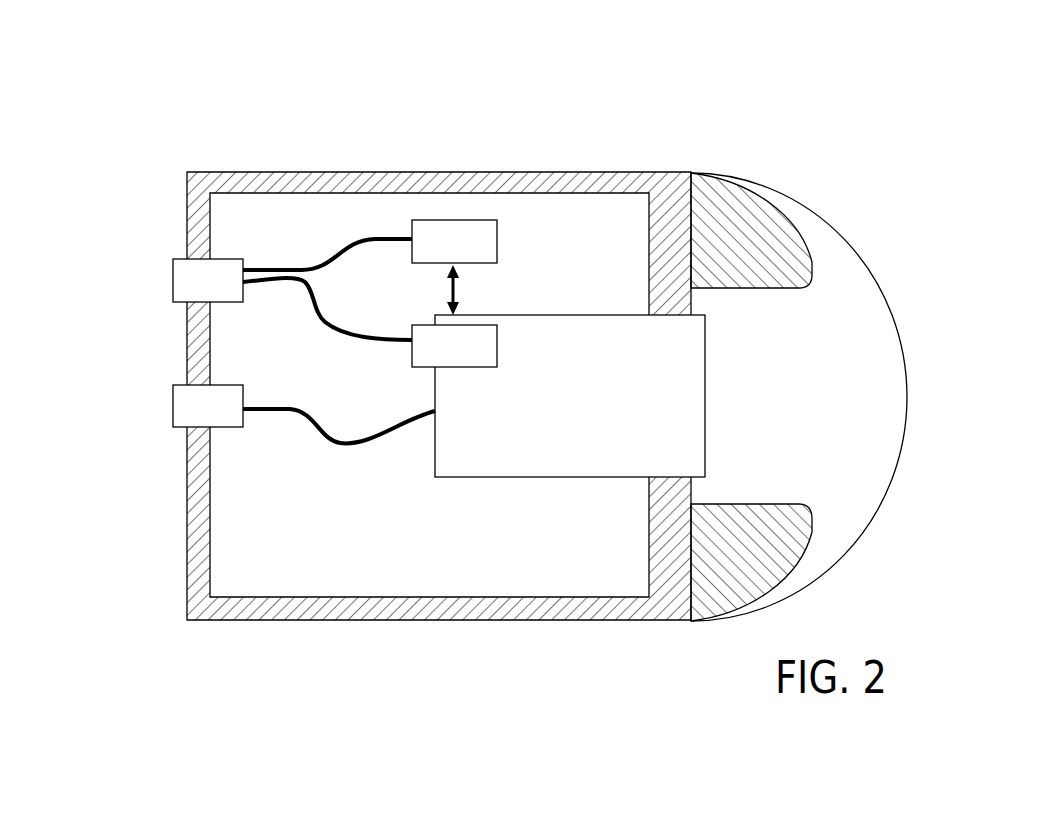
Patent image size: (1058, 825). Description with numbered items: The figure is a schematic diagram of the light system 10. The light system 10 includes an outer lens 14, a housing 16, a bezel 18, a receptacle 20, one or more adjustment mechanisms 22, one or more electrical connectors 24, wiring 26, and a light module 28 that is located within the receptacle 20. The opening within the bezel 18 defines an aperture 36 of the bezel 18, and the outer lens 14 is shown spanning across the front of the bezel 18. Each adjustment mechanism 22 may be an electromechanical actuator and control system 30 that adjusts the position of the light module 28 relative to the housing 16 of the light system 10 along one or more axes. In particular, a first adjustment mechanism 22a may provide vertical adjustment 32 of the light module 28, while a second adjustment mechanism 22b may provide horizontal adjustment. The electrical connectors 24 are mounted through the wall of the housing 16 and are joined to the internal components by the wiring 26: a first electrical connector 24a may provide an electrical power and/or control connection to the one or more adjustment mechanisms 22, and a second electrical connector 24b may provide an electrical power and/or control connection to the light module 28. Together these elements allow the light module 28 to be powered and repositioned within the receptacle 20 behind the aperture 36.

The light system 10 is at (395, 72).
The outer lens 14 is at (892, 302).
The housing 16 is at (225, 168).
The bezel 18 is at (782, 233).
The receptacle 20 is at (632, 485).
The adjustment mechanisms 22 is at (486, 229).
The first adjustment mechanism 22a is at (461, 232).
The second adjustment mechanism 22b is at (418, 337).
The electrical connectors 24 is at (251, 340).
The first electrical connector 24a is at (182, 282).
The second electrical connector 24b is at (182, 408).
The wiring 26 is at (298, 243).
The light module 28 is at (612, 330).
The electromechanical actuator and control system 30 is at (511, 242).
The vertical adjustment 32 is at (456, 297).
The aperture 36 is at (825, 488).